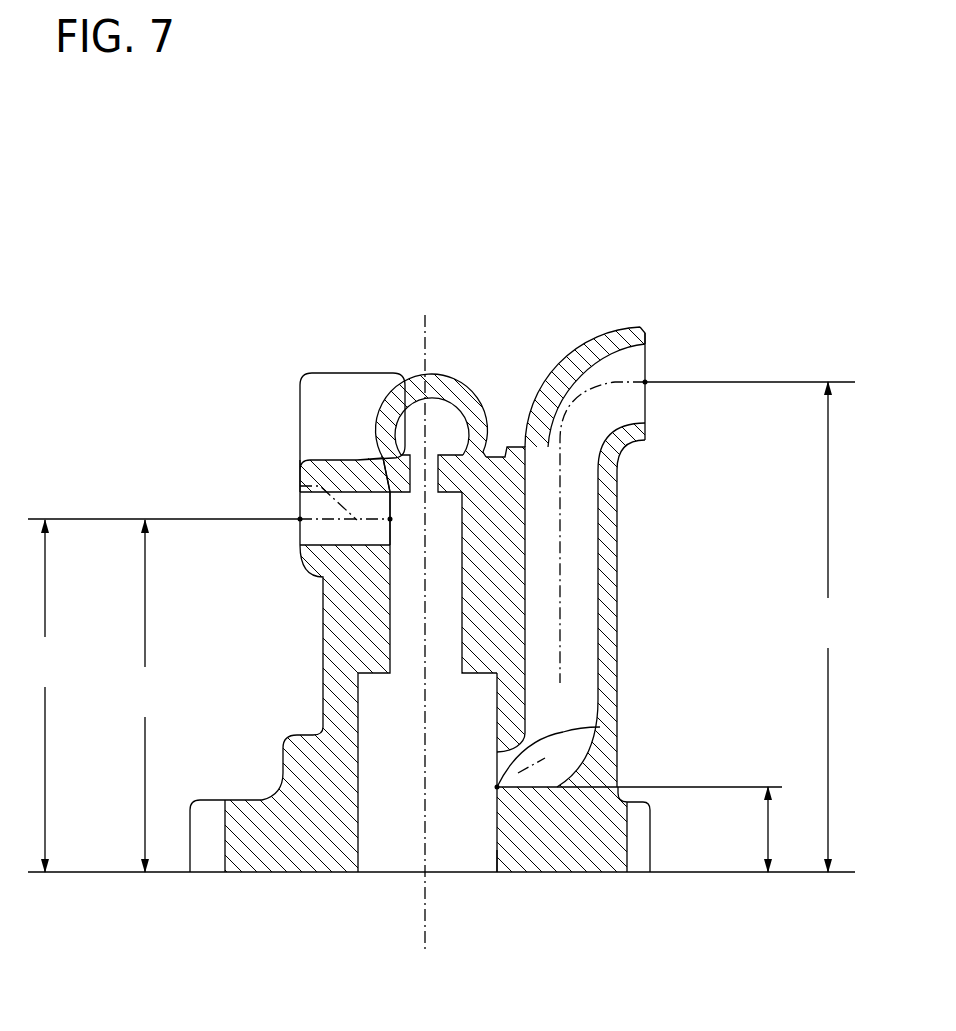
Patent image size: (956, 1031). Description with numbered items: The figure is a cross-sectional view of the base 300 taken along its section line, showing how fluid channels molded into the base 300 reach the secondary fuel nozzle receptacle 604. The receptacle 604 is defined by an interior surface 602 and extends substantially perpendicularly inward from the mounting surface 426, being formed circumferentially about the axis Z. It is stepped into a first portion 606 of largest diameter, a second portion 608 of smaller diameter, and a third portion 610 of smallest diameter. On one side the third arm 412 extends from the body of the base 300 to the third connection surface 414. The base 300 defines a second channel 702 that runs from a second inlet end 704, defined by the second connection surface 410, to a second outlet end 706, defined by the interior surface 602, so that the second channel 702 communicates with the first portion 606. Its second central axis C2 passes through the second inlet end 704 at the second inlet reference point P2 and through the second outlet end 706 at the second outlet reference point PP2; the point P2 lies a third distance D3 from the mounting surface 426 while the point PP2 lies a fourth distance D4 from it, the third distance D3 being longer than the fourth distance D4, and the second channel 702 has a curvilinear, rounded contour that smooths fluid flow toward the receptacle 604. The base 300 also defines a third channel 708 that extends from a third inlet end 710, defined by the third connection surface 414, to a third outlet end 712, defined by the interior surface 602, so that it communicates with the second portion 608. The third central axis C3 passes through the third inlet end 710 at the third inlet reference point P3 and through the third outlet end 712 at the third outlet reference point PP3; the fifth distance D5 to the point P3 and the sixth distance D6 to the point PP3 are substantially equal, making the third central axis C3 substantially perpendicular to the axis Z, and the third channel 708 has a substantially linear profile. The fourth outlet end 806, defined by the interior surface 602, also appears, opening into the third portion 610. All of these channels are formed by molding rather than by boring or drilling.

The base 300 is at (303, 197).
The second connection surface 410 is at (647, 340).
The third arm 412 is at (348, 449).
The third connection surface 414 is at (300, 483).
The mounting surface 426 is at (533, 873).
The interior surface 602 is at (497, 862).
The secondary fuel nozzle receptacle 604 is at (398, 860).
The first portion 606 is at (350, 777).
The second portion 608 is at (378, 637).
The third portion 610 is at (452, 467).
The second channel 702 is at (585, 592).
The second inlet end 704 is at (653, 407).
The second outlet end 706 is at (506, 799).
The third channel 708 is at (300, 500).
The third inlet end 710 is at (287, 541).
The third outlet end 712 is at (380, 537).
The fourth outlet end 806 is at (437, 440).
The second inlet reference point P2 is at (645, 382).
The third inlet reference point P3 is at (300, 519).
The second outlet reference point PP2 is at (600, 727).
The third outlet reference point PP3 is at (390, 503).
The second central axis C2 is at (560, 517).
The third central axis C3 is at (300, 486).
The axis Z is at (424, 618).
The third distance D3 is at (828, 627).
The fourth distance D4 is at (795, 829).
The fifth distance D5 is at (148, 696).
The sixth distance D6 is at (47, 696).